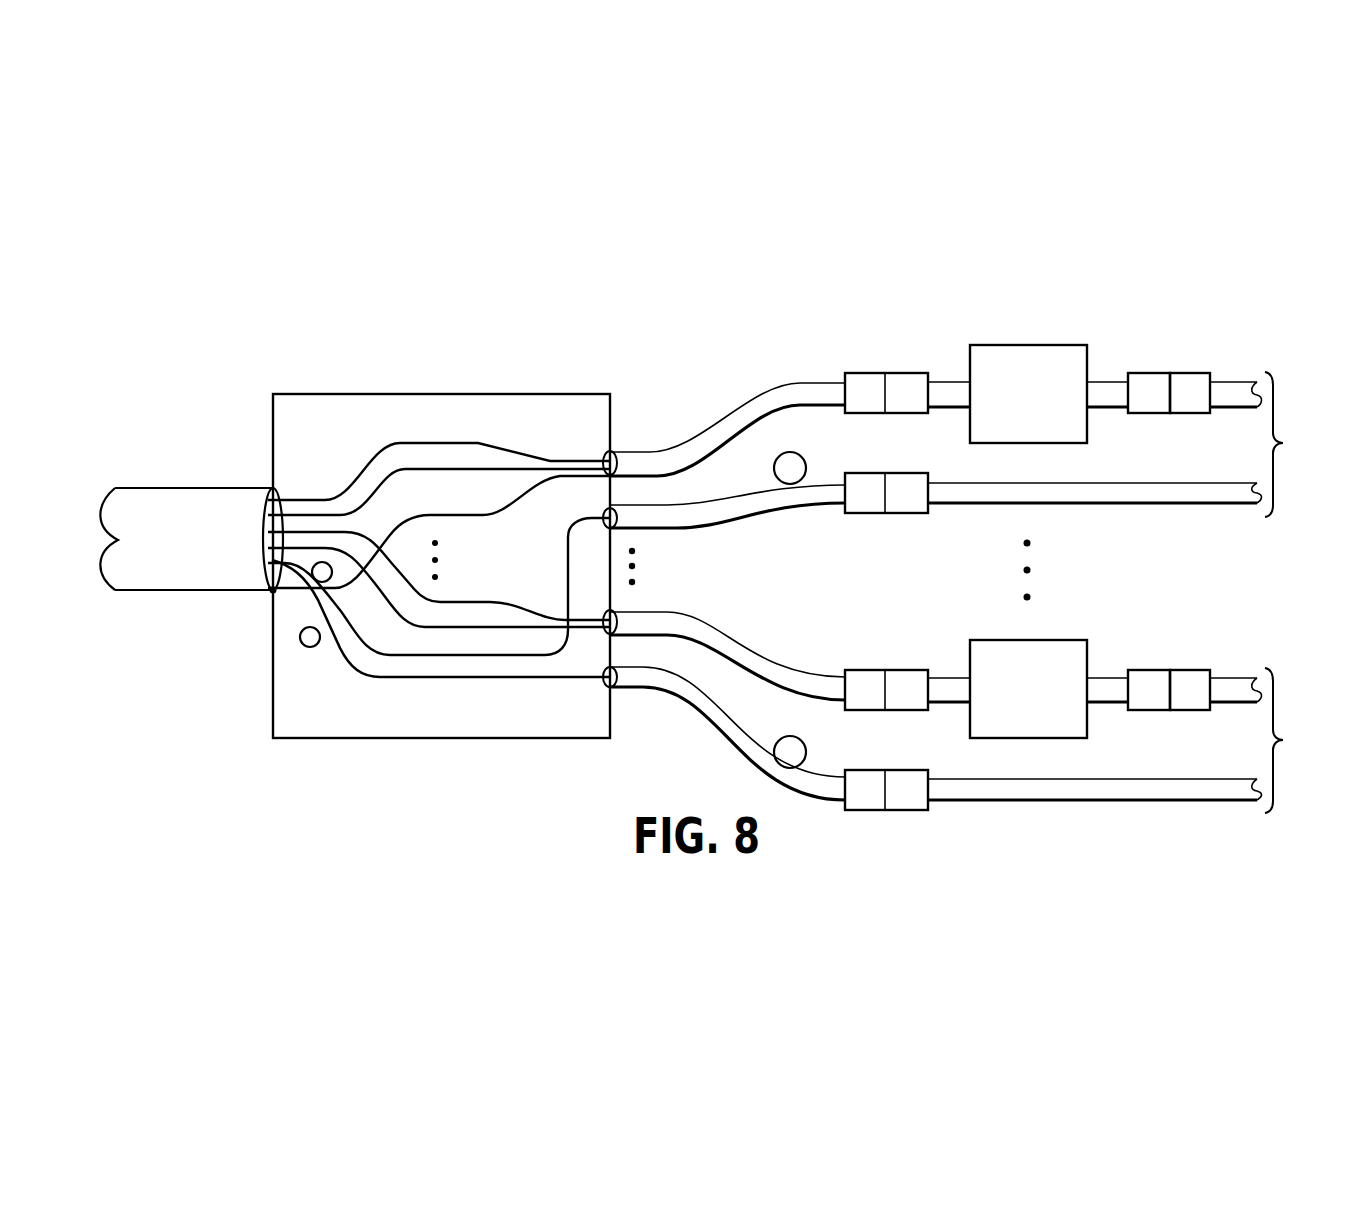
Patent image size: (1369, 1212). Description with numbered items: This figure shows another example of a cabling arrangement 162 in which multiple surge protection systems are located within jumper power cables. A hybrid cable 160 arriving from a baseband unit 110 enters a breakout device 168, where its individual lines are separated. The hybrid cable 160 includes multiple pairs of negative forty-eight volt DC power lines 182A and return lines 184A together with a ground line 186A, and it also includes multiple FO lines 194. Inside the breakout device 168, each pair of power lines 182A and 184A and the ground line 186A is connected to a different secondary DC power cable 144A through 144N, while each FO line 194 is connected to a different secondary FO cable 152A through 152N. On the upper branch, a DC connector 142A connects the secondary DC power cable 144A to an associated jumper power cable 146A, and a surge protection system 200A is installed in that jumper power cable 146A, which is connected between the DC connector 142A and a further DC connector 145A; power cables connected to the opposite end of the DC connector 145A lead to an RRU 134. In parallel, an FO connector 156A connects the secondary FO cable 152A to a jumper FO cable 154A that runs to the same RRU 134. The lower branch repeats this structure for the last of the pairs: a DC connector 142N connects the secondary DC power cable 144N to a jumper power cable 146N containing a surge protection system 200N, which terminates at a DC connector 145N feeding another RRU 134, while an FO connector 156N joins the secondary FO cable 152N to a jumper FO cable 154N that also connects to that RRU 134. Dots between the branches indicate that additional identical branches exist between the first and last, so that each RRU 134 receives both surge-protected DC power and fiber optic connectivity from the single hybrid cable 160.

The cabling system 162 is at (500, 317).
The hybrid cable 160 is at (187, 592).
The baseband unit (BBU) 110 is at (70, 539).
The breakout device 168 is at (364, 393).
The -48 VDC power line 182A is at (440, 441).
The return line 184A is at (555, 462).
The ground line 186A is at (480, 518).
The FO line 194 is at (387, 678).
The secondary DC power cable 144A is at (753, 402).
The DC connector 142A is at (900, 413).
The surge protection system 200A is at (1030, 345).
The jumper power cable 146A is at (1108, 380).
The DC connector 145A is at (1188, 373).
The secondary FO cable 152A is at (743, 522).
The FO connector 156A is at (867, 514).
The jumper FO cable 154A is at (1090, 507).
The RRU 134 is at (1313, 592).
The secondary DC power cable 144N is at (792, 666).
The DC connector 142N is at (910, 670).
The surge protection system 200N is at (1042, 738).
The jumper power cable 146N is at (1108, 677).
The DC connector 145N is at (1188, 670).
The secondary FO cable 152N is at (737, 757).
The FO connector 156N is at (905, 811).
The jumper FO cable 154N is at (1090, 802).